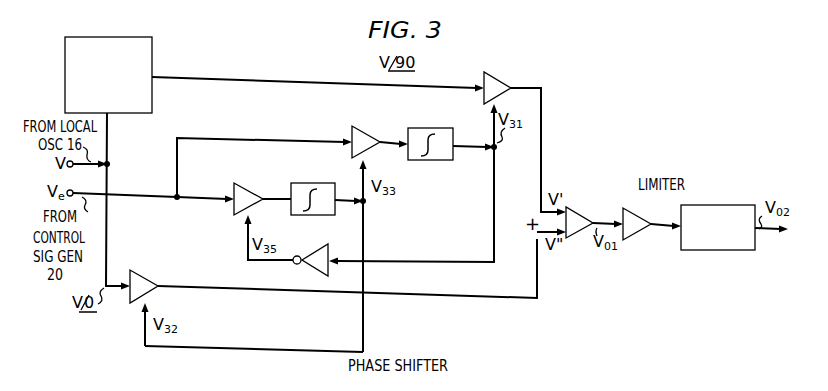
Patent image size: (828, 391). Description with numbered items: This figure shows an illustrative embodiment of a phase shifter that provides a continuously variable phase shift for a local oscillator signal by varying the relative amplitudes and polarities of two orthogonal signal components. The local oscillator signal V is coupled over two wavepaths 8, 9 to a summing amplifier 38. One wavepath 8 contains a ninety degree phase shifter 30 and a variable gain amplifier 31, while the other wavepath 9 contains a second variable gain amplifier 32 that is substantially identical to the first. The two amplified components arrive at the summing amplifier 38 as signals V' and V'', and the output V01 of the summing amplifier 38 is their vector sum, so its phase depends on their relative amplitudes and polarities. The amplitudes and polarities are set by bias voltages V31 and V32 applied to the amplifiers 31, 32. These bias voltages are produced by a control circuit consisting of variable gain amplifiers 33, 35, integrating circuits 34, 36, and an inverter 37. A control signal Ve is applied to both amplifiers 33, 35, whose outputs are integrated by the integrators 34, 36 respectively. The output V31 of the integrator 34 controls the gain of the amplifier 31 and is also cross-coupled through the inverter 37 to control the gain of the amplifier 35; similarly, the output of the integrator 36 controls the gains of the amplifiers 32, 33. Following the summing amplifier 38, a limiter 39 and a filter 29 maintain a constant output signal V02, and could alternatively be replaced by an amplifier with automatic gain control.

The 90 degree phase shifter 30 is at (130, 43).
The wavepath 8 is at (270, 80).
The wavepath 9 is at (109, 261).
The variable gain amplifier 31 is at (489, 81).
The second variable gain amplifier 32 is at (144, 281).
The variable gain amplifier 33 is at (352, 130).
The integrating circuit 34 is at (421, 136).
The variable gain amplifier 35 is at (236, 186).
The integrating circuit 36 is at (305, 194).
The inverter 37 is at (305, 258).
The summing amplifier 38 is at (571, 220).
The limiter 39 is at (631, 222).
The filter 29 is at (720, 212).